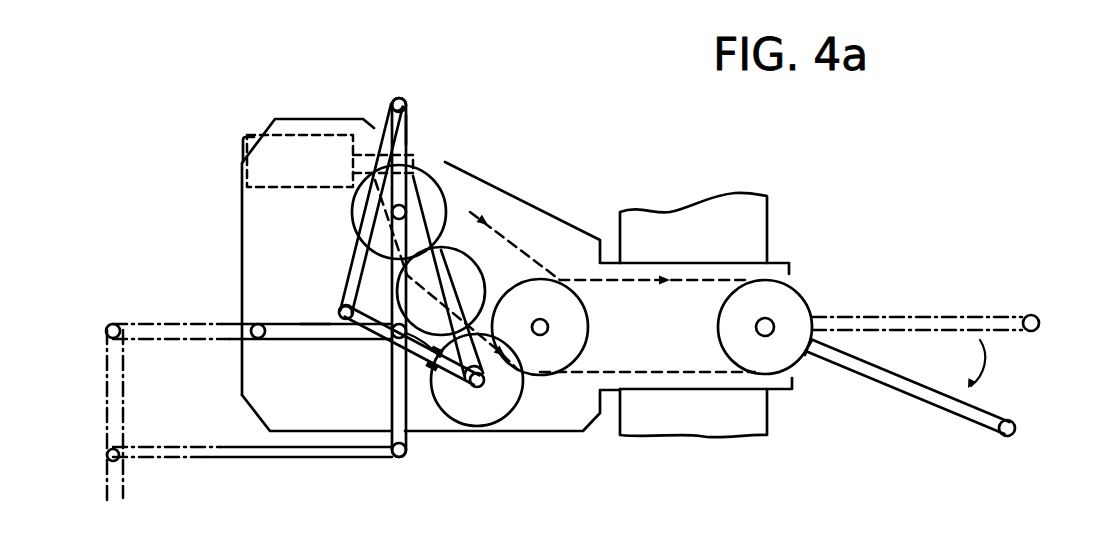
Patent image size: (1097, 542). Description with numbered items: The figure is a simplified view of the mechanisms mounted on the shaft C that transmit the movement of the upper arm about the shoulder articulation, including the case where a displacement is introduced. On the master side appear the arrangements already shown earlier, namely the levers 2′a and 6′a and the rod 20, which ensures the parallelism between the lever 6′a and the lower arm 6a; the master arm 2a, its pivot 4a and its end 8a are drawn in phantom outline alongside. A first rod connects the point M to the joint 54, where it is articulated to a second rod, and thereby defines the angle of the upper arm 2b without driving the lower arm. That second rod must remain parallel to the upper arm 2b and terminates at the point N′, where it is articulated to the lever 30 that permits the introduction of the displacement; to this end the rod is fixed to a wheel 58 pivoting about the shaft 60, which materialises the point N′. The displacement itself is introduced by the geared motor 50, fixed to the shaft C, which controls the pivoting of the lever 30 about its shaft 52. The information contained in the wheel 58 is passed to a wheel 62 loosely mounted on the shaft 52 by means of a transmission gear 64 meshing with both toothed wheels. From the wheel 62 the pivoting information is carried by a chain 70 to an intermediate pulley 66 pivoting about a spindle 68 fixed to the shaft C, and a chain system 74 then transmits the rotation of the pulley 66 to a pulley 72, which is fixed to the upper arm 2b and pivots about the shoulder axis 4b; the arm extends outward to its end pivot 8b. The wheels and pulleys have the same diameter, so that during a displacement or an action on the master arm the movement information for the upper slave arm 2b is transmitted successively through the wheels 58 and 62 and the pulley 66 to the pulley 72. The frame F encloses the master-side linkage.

The frame F is at (316, 119).
The geared motor 50 is at (247, 137).
The wheel 62 is at (347, 207).
The shaft 52 is at (392, 212).
The point M is at (397, 102).
The lever 6′a is at (407, 130).
The joint 54 is at (342, 310).
The wheel 58 is at (448, 420).
The shaft 60 is at (487, 388).
The point N' N′ is at (480, 387).
The transmission gear 64 is at (473, 267).
The intermediate pulley 66 is at (572, 305).
The spindle 68 is at (548, 331).
The chain 70 is at (480, 181).
The lever 30 is at (468, 212).
The chain system 74 is at (710, 280).
The shaft C is at (693, 390).
The shoulder axis 4b is at (774, 322).
The pulley 72 is at (786, 355).
The upper arm 2b is at (907, 385).
The arm end pivot 8b is at (1006, 432).
The arm 2a is at (195, 337).
The lever 2′a is at (303, 330).
The pivot 4a is at (258, 323).
The arm end pivot 8a is at (112, 302).
The rod 20 is at (275, 455).
The lower arm 6a is at (123, 497).